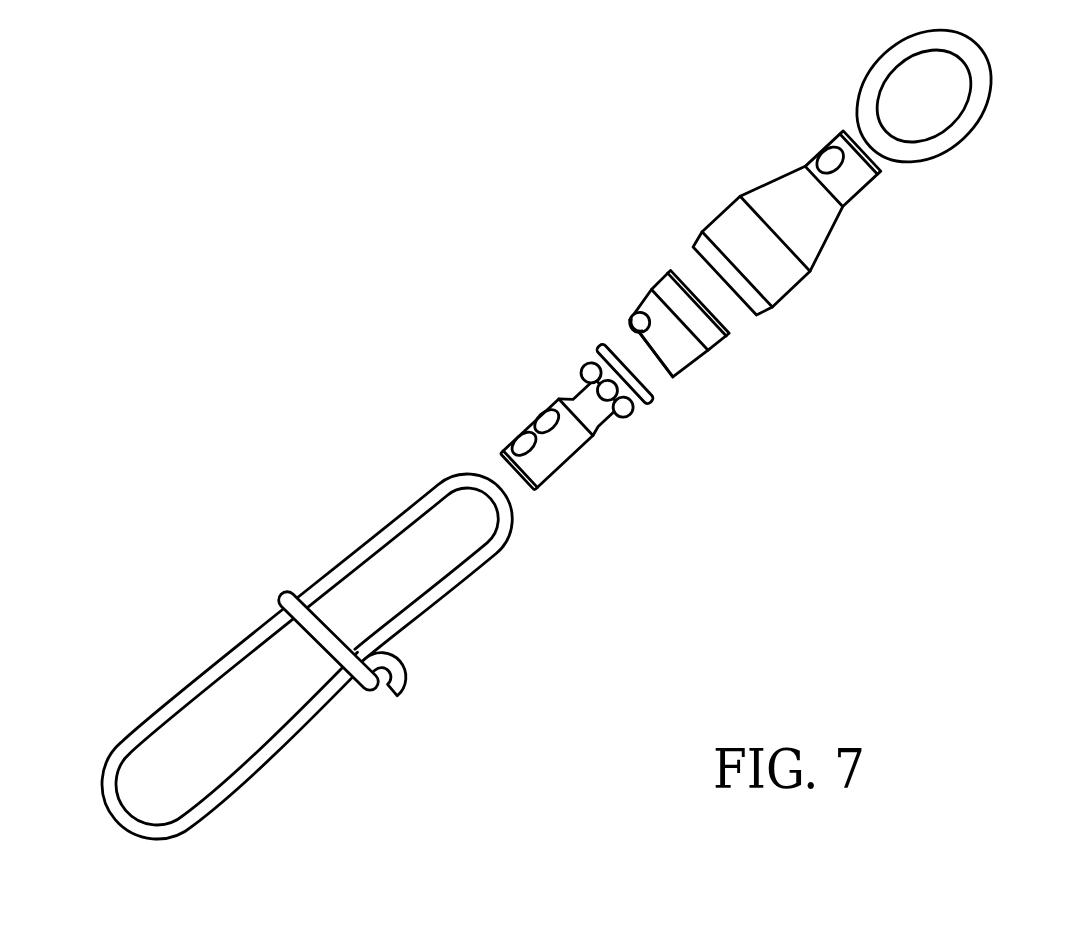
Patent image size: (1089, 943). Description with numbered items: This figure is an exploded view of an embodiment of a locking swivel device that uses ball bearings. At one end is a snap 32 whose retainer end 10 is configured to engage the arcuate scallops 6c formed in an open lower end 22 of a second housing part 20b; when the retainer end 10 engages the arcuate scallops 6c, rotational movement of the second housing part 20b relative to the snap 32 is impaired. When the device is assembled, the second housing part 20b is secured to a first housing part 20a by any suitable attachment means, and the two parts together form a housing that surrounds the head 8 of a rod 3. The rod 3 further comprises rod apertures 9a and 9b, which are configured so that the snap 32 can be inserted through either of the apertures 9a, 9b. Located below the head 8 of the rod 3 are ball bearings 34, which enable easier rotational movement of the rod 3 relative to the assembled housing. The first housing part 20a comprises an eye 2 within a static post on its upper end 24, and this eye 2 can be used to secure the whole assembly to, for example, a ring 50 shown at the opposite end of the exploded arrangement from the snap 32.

The eye 2 is at (827, 157).
The rod 3 is at (541, 439).
The arcuate scallops 6c is at (635, 315).
The head 8 is at (600, 354).
The rod aperture 9a is at (547, 420).
The rod aperture 9b is at (527, 443).
The retainer end 10 is at (332, 664).
The first housing part 20a is at (815, 216).
The second housing part 20b is at (680, 348).
The open lower end 22 is at (662, 370).
The upper end 24 is at (836, 207).
The snap 32 is at (328, 641).
The ball bearings 34 is at (628, 413).
The ring 50 is at (972, 60).